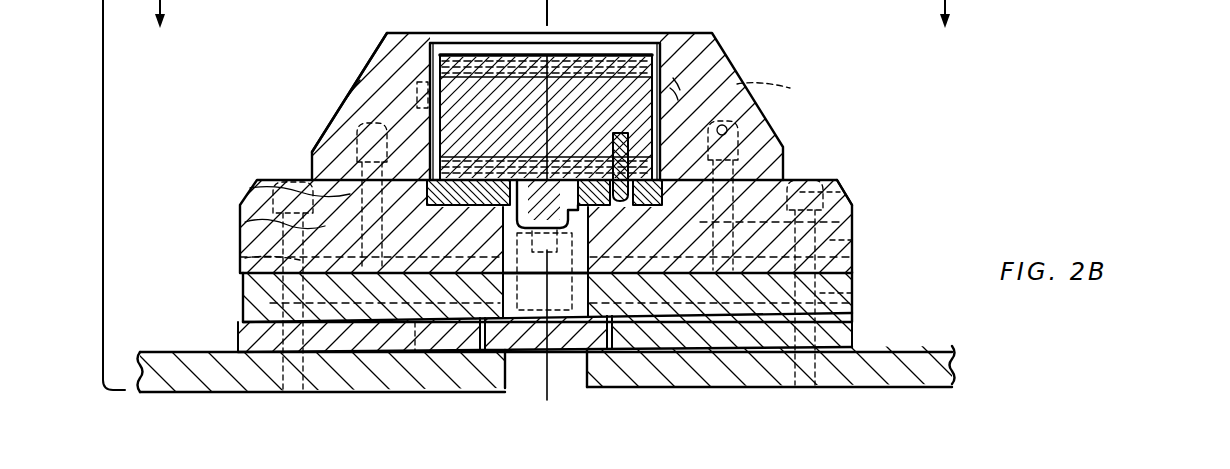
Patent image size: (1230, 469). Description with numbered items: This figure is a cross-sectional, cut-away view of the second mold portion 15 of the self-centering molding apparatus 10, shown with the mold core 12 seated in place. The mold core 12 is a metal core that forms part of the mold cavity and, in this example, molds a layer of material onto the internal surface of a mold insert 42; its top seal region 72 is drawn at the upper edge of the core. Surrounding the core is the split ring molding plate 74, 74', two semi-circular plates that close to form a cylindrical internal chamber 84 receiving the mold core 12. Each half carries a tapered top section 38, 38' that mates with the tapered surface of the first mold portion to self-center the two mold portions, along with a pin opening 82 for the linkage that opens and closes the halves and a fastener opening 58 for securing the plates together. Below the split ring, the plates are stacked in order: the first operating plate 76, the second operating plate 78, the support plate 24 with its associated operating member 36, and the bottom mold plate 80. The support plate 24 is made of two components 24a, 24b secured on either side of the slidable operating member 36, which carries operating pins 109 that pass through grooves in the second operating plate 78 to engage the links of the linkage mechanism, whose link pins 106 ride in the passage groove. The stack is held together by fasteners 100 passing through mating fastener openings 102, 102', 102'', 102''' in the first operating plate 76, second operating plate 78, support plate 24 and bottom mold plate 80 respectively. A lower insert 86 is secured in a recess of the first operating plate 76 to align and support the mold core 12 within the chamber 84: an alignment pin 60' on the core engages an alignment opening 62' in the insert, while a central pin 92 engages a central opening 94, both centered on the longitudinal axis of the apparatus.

The self-centering molding apparatus 10 is at (103, 49).
The cylindrical internal chamber 84 is at (462, 26).
The mold core 12 is at (592, 80).
The piston seal band 72 is at (642, 58).
The mold insert 42 is at (735, 6).
The tapered top section 38' is at (340, 90).
The split ring molding plate 74' is at (316, 79).
The tapered top section 38 is at (547, 149).
The split ring molding plate 74 is at (735, 77).
The fastener opening 58 is at (790, 88).
The pin opening 82 is at (728, 130).
The alignment pin 60' is at (725, 159).
The alignment opening 62' is at (832, 171).
The second mold portion 15 is at (872, 110).
The fastener opening 102 is at (866, 171).
The first operating plate 76 is at (851, 213).
The central opening 94 is at (250, 188).
The central pin 92 is at (245, 222).
The link pin 106 is at (245, 258).
The fastener opening 102' is at (885, 226).
The second operating plate 78 is at (855, 270).
The fastener opening 102'' is at (888, 289).
The support plate 24 is at (583, 365).
The fastener 100 is at (288, 365).
The lower insert 86 is at (415, 352).
The support plate component 24b is at (481, 346).
The operating member 36 is at (531, 370).
The operating pin 109 is at (612, 326).
The support plate component 24a is at (712, 342).
The fastener opening 102''' is at (839, 299).
The bottom mold plate 80 is at (922, 378).